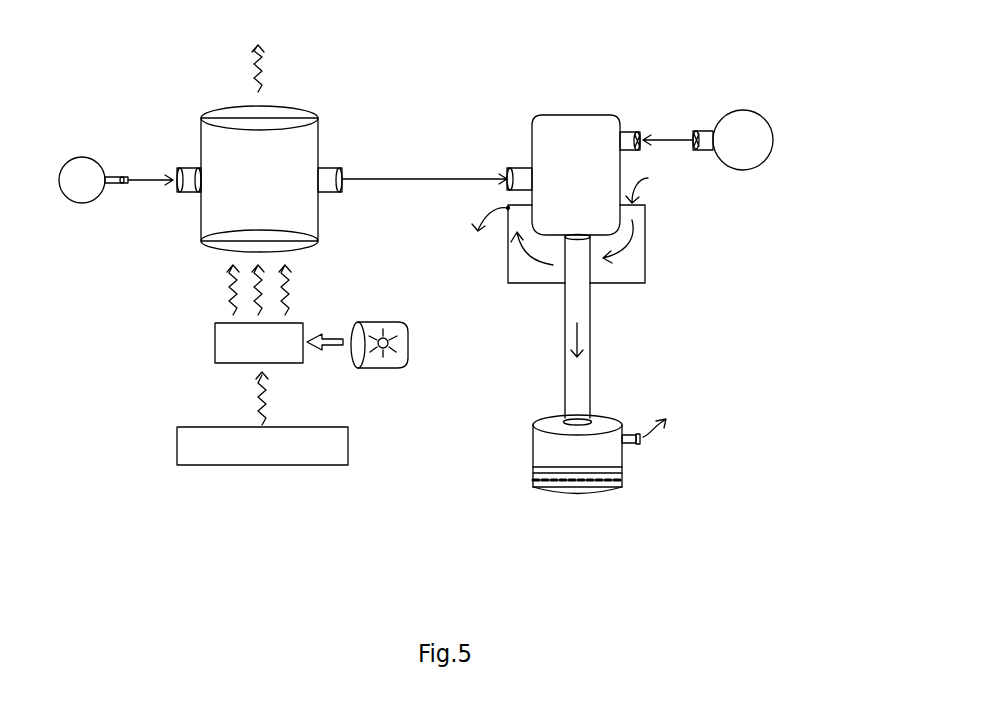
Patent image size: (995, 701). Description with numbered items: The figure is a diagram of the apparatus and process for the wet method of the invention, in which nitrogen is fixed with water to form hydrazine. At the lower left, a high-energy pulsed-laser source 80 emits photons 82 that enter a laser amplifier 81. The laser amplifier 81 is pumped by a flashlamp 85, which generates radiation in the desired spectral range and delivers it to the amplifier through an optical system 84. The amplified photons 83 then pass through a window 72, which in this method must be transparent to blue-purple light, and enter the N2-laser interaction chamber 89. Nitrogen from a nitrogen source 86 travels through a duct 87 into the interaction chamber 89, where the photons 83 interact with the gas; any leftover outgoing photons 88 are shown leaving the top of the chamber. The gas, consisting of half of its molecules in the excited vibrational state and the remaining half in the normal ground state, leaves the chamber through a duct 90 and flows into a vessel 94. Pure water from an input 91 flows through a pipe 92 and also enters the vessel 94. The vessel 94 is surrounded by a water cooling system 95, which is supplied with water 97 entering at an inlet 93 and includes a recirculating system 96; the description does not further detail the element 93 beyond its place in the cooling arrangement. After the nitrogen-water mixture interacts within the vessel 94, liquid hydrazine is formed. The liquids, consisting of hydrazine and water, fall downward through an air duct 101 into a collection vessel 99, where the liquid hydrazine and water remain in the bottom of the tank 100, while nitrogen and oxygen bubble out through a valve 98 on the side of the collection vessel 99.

The window 72 is at (235, 245).
The high-energy pulsed-laser source 80 is at (177, 442).
The laser amplifier 81 is at (215, 338).
The photons 82 is at (267, 403).
The photons after laser amplification 83 is at (285, 285).
The optical system 84 is at (327, 340).
The flashlamp 85 is at (373, 368).
The nitrogen source 86 is at (82, 203).
The duct 87 is at (165, 177).
The leftover outgoing photons 88 is at (273, 61).
The N2-laser interaction chamber 89 is at (313, 117).
The duct 90 is at (403, 178).
The input 91 is at (732, 110).
The pipe 92 is at (660, 133).
The cooling water inlet 93 is at (648, 178).
The vessel 94 is at (540, 117).
The water cooling system 95 is at (530, 285).
The recirculating system 96 is at (486, 231).
The water 97 is at (645, 243).
The valve 98 is at (690, 412).
The vessel 99 is at (602, 452).
The bottom of the tank 100 is at (555, 472).
The air duct 101 is at (592, 350).